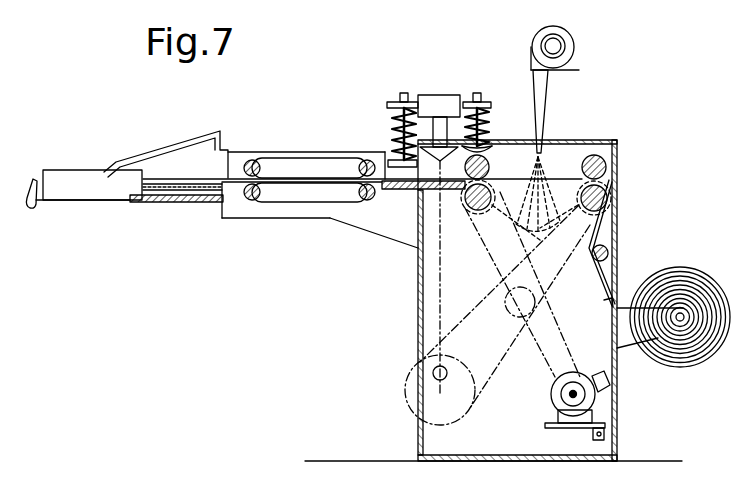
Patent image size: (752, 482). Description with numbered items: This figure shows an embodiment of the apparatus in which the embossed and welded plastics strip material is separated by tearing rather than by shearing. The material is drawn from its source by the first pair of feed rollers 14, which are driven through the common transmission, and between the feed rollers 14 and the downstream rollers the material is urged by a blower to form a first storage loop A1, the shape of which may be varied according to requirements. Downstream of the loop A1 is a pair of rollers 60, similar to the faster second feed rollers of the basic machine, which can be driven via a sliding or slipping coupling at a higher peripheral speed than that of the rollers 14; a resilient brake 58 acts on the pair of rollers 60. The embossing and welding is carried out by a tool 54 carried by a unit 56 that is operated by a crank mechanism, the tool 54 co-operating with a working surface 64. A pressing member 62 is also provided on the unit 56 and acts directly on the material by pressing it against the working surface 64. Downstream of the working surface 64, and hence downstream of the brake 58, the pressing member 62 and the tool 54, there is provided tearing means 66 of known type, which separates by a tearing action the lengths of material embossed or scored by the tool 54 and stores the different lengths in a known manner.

The first pair of feed rollers 14 is at (610, 176).
The tool 54 is at (392, 146).
The unit 56 is at (432, 93).
The resilient brake 58 is at (483, 112).
The pair of rollers 60 is at (491, 161).
The pressing member 62 is at (392, 112).
The working surface 64 is at (397, 189).
The tearing means 66 is at (284, 150).
The first storage loop A1 is at (552, 251).